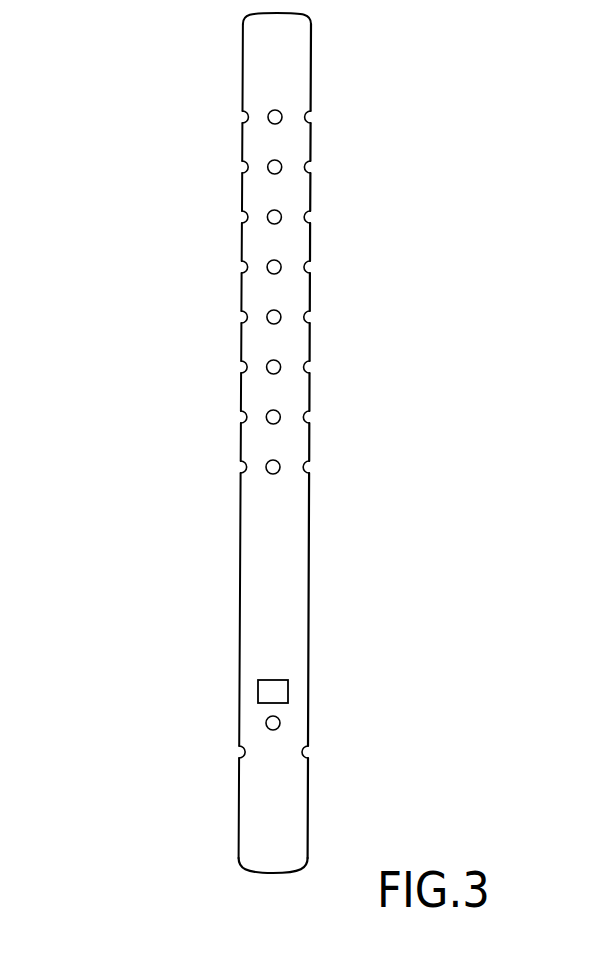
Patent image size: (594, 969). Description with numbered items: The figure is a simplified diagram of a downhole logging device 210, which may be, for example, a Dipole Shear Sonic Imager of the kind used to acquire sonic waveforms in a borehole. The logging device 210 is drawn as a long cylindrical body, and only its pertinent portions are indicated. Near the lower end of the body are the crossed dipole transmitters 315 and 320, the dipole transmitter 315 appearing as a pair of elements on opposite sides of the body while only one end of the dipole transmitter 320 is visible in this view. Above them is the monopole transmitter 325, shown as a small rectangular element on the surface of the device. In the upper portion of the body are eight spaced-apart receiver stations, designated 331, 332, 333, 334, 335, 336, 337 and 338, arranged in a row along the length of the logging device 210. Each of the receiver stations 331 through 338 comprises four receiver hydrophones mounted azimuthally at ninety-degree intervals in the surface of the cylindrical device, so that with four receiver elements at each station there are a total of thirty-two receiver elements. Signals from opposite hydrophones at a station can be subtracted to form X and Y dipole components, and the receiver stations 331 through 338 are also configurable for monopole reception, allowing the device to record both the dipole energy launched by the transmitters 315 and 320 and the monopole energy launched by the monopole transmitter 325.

The logging device 210 is at (196, 597).
The dipole transmitter 315 is at (240, 752).
The dipole transmitter 320 is at (280, 722).
The monopole transmitter 325 is at (283, 690).
The receiver station 331 is at (232, 463).
The receiver station 332 is at (319, 411).
The receiver station 333 is at (232, 363).
The receiver station 334 is at (319, 311).
The receiver station 335 is at (232, 263).
The receiver station 336 is at (320, 210).
The receiver station 337 is at (232, 163).
The receiver station 338 is at (320, 110).